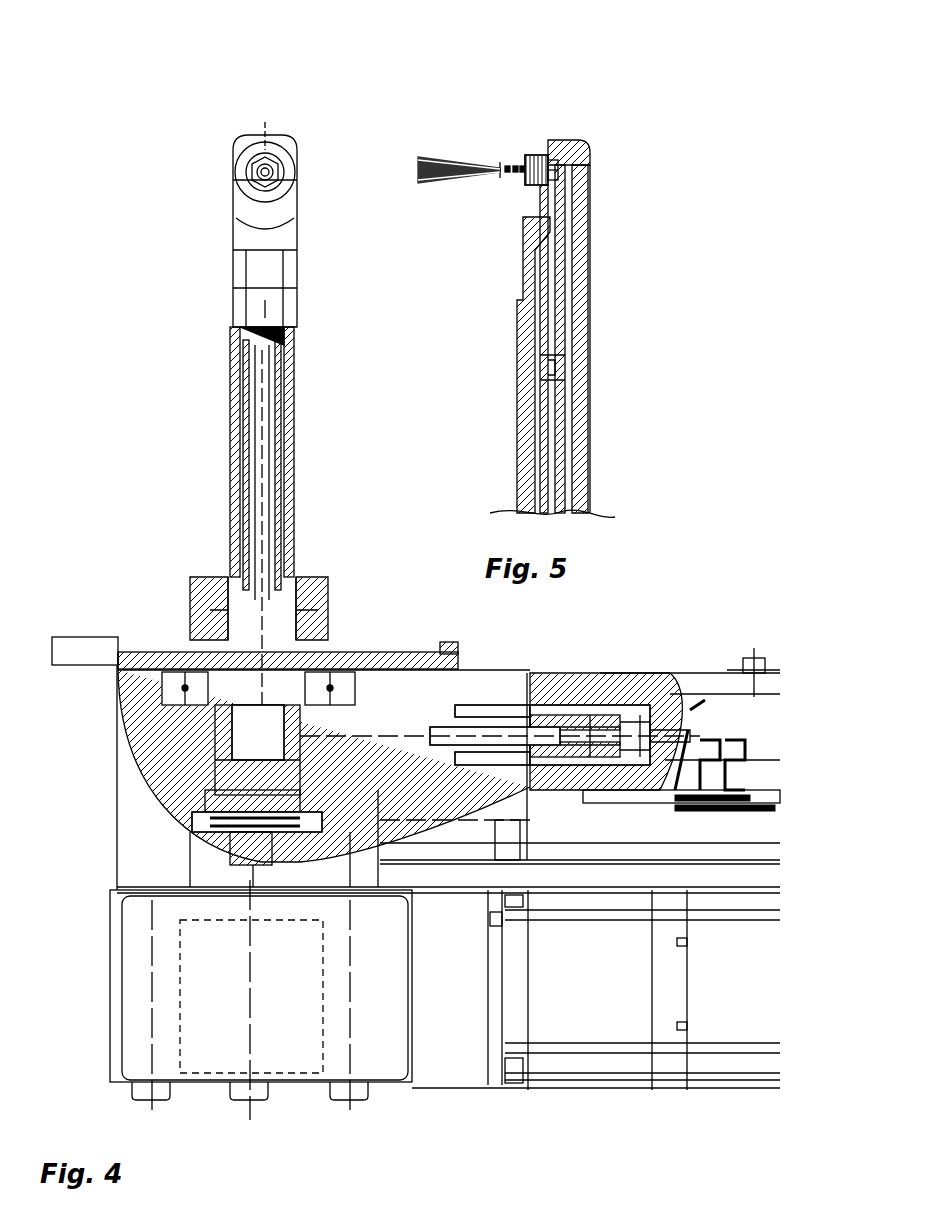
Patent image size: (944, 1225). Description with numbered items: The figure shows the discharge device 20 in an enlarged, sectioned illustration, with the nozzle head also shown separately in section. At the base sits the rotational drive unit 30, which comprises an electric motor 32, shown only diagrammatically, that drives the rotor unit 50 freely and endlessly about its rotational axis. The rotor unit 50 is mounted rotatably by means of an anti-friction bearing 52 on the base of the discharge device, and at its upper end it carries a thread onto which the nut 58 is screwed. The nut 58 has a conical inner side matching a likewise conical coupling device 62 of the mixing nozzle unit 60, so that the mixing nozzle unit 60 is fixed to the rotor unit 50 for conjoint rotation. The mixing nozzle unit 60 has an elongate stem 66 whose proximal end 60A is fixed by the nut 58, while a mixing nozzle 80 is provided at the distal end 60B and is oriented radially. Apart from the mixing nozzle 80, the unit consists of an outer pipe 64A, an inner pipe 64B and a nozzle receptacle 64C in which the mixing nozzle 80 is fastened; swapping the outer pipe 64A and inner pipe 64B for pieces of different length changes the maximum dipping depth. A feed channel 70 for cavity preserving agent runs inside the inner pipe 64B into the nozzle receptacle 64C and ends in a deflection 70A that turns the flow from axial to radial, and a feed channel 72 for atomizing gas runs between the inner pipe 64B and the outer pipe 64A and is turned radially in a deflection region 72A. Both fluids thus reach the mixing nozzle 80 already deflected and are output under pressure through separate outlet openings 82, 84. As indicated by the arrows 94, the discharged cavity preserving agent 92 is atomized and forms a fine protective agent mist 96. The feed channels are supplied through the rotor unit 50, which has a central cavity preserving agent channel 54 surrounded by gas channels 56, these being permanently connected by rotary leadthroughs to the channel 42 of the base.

In FIG. 4, the discharge device 20 is at (632, 665).
In FIG. 4, the rotational drive unit 30 is at (105, 1018).
In FIG. 4, the electric motor 32 is at (188, 952).
In FIG. 4, the channel 42 is at (455, 720).
In FIG. 4, the rotor unit 50 is at (190, 633).
In FIG. 4, the anti-friction bearing 52 is at (190, 687).
In FIG. 4, the central cavity preserving agent channel 54 is at (215, 728).
In FIG. 4, the gas channels 56 is at (225, 770).
In FIG. 4, the nut 58 is at (190, 577).
In FIG. 4, the mixing nozzle unit 60 is at (222, 310).
In FIG. 4, the proximal end 60A is at (300, 585).
In FIG. 4, the distal end 60B is at (302, 182).
In FIG. 4, the coupling device 62 is at (328, 597).
In FIG. 5, the outer pipe 64A is at (583, 378).
In FIG. 5, the inner pipe 64B is at (542, 417).
In FIG. 5, the nozzle receptacle 64C is at (593, 200).
In FIG. 4, the elongate stem 66 is at (298, 402).
In FIG. 4, the feed channel 70 is at (253, 517).
In FIG. 5, the deflection 70A is at (560, 140).
In FIG. 4, the feed channel 72 is at (243, 467).
In FIG. 5, the deflection region 72A is at (580, 140).
In FIG. 4, the mixing nozzle 80 is at (250, 175).
In FIG. 5, the mixing nozzle 80 is at (535, 150).
In FIG. 4, the outlet opening 82 is at (298, 178).
In FIG. 5, the outlet opening 82 is at (523, 182).
In FIG. 4, the outlet opening 84 is at (282, 170).
In FIG. 5, the outlet opening 84 is at (530, 217).
In FIG. 5, the cavity preserving agent 92 is at (505, 160).
In FIG. 5, the arrows 94 is at (520, 150).
In FIG. 5, the protective agent mist 96 is at (440, 168).